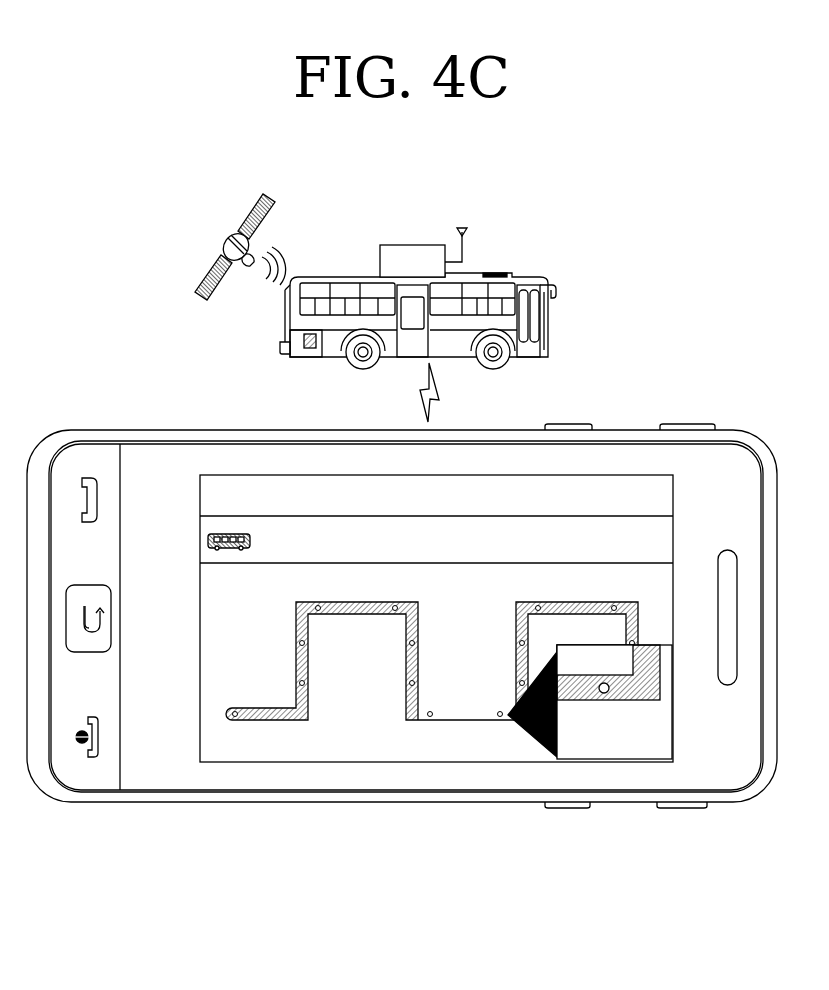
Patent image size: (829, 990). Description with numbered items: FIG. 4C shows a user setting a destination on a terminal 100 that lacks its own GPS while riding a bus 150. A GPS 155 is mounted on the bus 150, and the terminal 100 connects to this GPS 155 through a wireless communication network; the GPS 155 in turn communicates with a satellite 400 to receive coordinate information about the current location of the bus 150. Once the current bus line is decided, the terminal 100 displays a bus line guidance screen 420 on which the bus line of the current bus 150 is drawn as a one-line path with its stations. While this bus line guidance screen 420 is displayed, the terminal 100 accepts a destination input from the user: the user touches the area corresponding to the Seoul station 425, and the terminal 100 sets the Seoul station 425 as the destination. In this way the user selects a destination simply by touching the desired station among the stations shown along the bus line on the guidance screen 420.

The terminal 100 is at (402, 609).
The bus 150 is at (538, 276).
The GPS 155 is at (380, 245).
The satellite 400 is at (222, 242).
The bus line guidance screen 420 is at (236, 478).
The Seoul station 425 is at (612, 733).